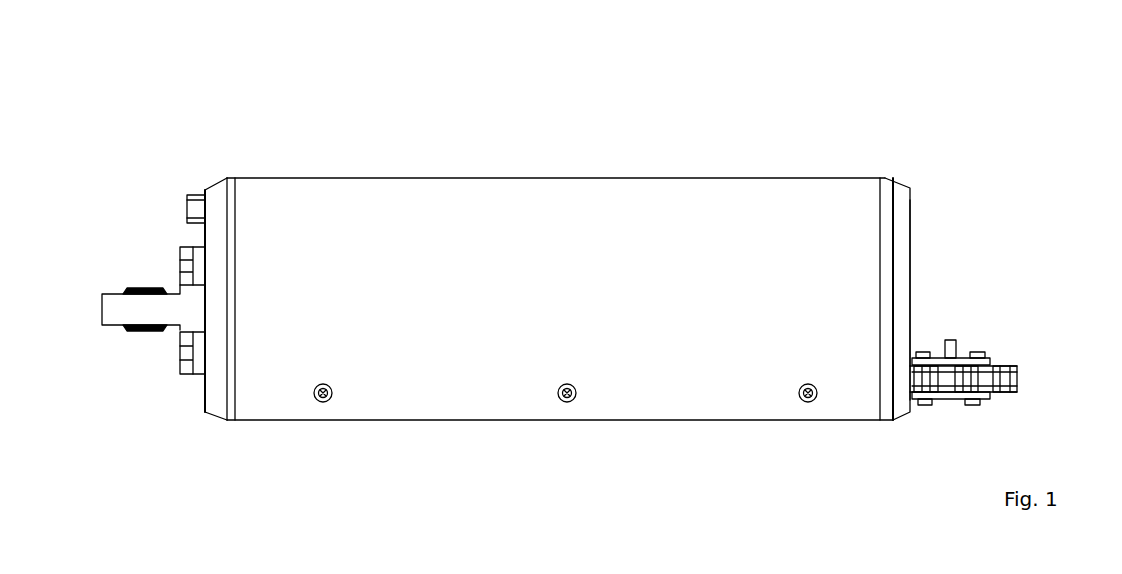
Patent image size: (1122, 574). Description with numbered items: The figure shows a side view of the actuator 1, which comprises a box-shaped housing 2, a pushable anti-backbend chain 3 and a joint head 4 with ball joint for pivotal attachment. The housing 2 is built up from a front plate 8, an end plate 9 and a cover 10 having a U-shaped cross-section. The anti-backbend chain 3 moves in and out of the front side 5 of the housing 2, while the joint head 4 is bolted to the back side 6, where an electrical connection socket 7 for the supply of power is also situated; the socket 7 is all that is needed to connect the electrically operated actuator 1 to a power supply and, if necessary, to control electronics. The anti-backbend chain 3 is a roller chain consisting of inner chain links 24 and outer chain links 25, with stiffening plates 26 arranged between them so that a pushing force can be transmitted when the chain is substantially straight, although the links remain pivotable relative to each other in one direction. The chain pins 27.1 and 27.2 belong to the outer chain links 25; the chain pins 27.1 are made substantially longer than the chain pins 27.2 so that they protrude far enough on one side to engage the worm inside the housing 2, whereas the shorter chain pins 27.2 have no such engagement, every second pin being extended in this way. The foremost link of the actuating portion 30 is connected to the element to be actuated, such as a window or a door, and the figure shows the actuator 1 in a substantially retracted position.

The actuator 1 is at (559, 112).
The housing 2 is at (632, 172).
The anti-backbend chain 3 is at (998, 362).
The joint head 4 is at (140, 272).
The front side 5 is at (912, 230).
The back side 6 is at (205, 238).
The electrical connection socket 7 is at (195, 185).
The front plate 8 is at (900, 190).
The end plate 9 is at (218, 190).
The cover 10 is at (760, 200).
The inner chain links 24 is at (1020, 378).
The outer chain links 25 is at (958, 358).
The stiffening plates 26 is at (934, 400).
The chain pins 27.1 is at (950, 340).
The chain pins 27.2 is at (972, 400).
The actuating portion 30 is at (990, 396).